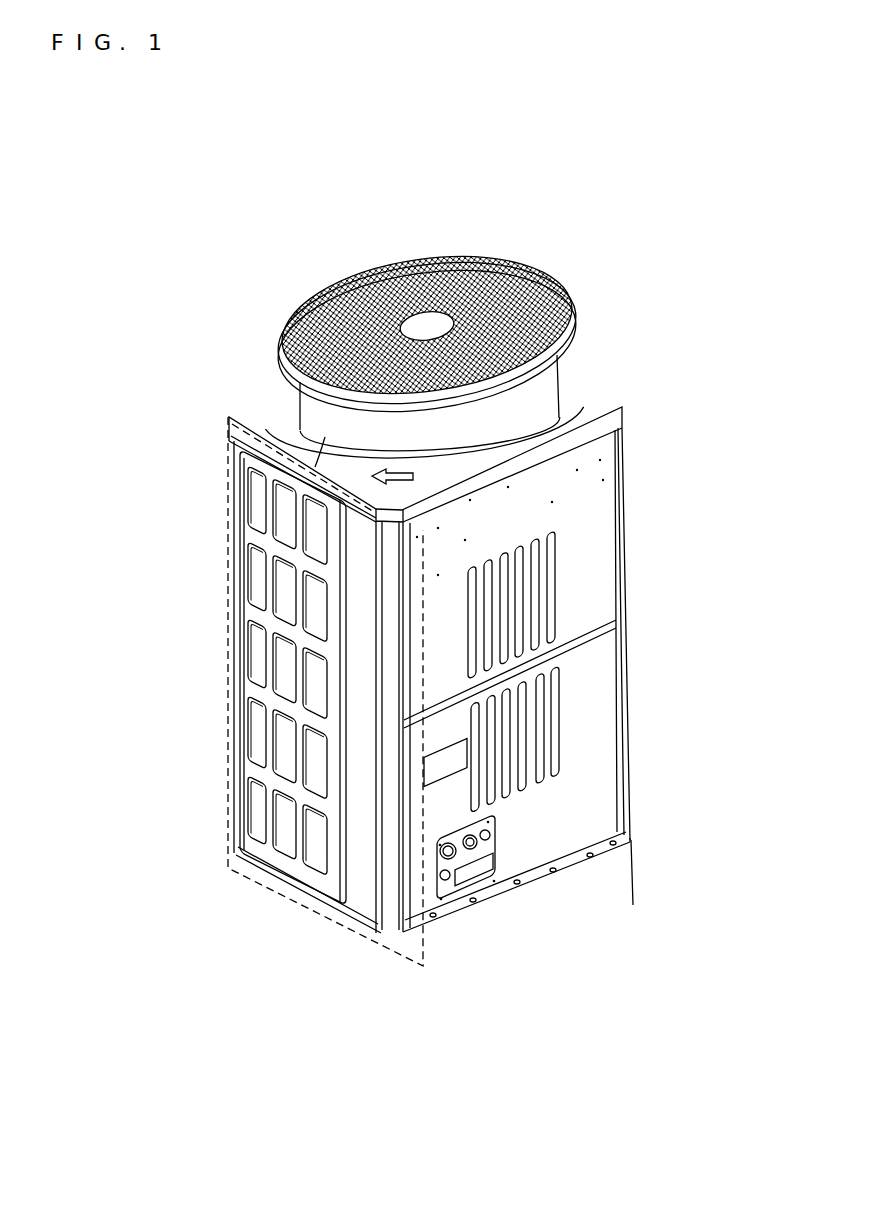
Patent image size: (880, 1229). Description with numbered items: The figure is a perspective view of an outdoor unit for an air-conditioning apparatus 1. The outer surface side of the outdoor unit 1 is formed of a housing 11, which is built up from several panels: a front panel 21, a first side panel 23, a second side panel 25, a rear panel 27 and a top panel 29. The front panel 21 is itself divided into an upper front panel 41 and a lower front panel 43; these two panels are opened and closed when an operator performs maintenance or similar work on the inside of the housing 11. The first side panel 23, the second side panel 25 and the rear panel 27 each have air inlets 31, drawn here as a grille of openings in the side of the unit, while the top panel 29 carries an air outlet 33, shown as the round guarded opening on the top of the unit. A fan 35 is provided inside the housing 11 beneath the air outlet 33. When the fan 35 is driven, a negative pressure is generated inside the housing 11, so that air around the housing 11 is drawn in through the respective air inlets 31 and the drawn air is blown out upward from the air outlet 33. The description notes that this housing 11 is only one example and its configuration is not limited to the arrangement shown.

The outdoor unit for an air-conditioning apparatus 1 is at (409, 1014).
The housing 11 is at (586, 389).
The front panel 21 is at (684, 420).
The first side panel 23 is at (263, 882).
The second side panel 25 is at (603, 399).
The rear panel 27 is at (268, 410).
The top panel 29 is at (563, 407).
The air inlets 31 is at (308, 716).
The air outlet 33 is at (400, 257).
The fan 35 is at (323, 287).
The upper front panel 41 is at (585, 583).
The lower front panel 43 is at (540, 843).